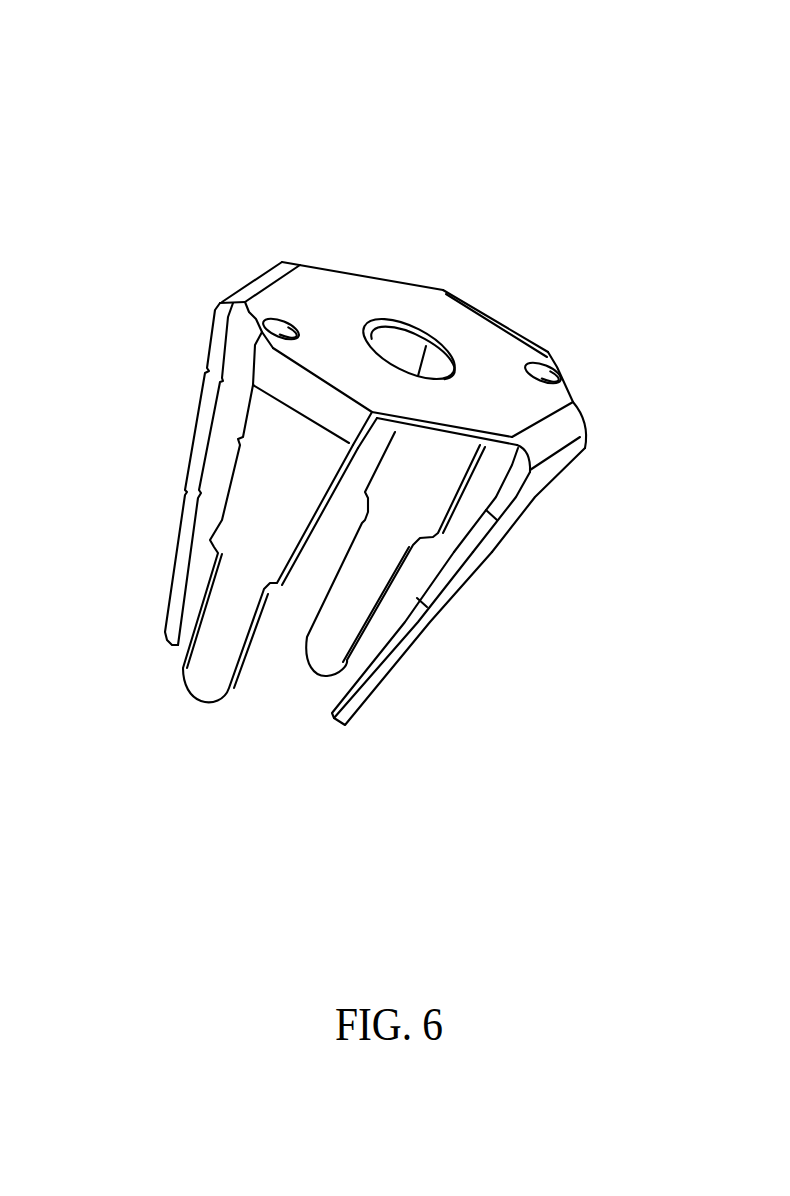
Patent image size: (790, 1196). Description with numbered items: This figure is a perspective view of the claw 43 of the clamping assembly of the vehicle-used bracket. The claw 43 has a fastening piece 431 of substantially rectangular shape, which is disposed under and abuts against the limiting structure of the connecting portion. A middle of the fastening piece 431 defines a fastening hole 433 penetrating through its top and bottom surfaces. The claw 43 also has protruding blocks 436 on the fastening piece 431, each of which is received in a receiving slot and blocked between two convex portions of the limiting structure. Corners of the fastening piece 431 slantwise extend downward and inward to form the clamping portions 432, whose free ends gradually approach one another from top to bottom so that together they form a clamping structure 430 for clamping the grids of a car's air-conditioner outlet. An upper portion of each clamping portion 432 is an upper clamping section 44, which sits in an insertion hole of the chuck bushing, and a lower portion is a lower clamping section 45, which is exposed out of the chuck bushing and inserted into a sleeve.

The claw 43 is at (95, 40).
The fastening piece 431 is at (348, 303).
The fastening hole 433 is at (442, 377).
The protruding block 436 is at (562, 372).
The clamping structure 430 is at (208, 717).
The clamping portion 432 is at (524, 586).
The upper clamping section 44 is at (510, 520).
The lower clamping section 45 is at (400, 665).